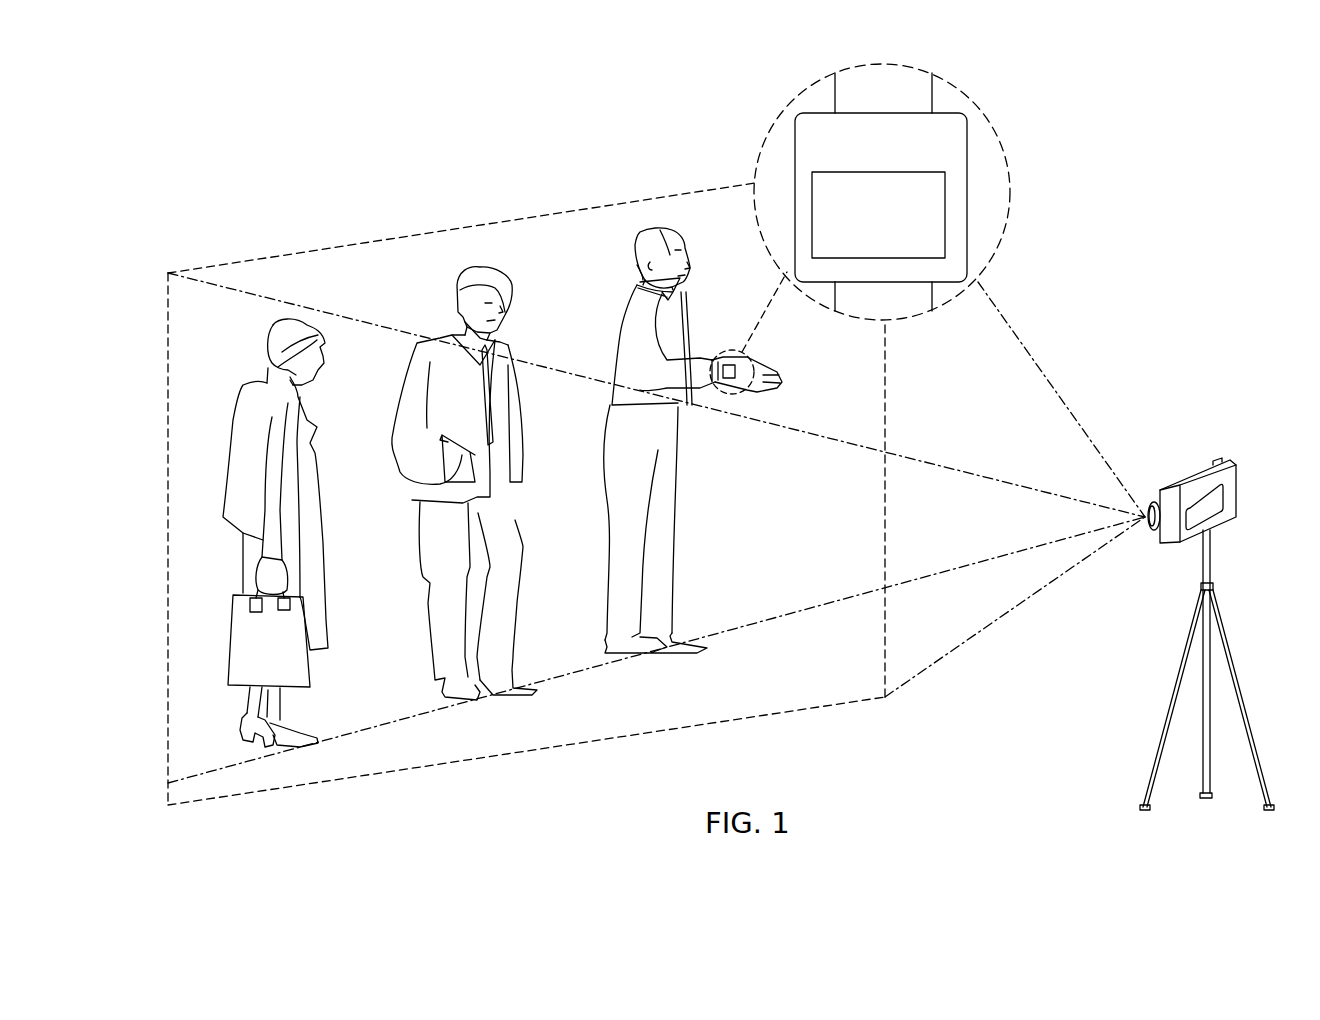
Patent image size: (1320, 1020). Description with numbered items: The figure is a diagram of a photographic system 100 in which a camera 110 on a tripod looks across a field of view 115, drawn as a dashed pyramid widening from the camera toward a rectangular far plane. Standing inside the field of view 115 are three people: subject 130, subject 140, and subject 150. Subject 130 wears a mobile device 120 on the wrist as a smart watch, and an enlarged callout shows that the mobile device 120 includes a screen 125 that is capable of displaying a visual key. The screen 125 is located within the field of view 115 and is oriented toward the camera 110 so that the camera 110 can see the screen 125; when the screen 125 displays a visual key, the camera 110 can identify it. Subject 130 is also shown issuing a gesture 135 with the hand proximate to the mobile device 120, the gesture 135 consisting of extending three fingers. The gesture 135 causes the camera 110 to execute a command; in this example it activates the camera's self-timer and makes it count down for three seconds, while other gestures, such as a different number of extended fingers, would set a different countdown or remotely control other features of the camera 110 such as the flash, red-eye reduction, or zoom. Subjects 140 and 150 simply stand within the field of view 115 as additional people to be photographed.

The photographic system 100 is at (1137, 92).
The camera 110 is at (1181, 482).
The field of view 115 is at (310, 251).
The mobile device 120 is at (967, 143).
The screen 125 is at (945, 218).
The subject 130 is at (639, 242).
The gesture 135 is at (782, 362).
The subject 140 is at (468, 266).
The subject 150 is at (273, 335).